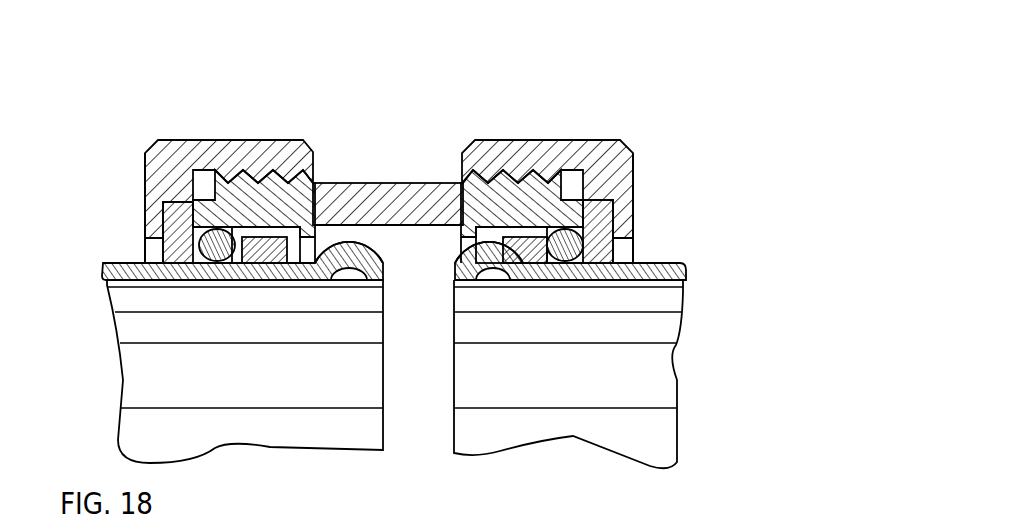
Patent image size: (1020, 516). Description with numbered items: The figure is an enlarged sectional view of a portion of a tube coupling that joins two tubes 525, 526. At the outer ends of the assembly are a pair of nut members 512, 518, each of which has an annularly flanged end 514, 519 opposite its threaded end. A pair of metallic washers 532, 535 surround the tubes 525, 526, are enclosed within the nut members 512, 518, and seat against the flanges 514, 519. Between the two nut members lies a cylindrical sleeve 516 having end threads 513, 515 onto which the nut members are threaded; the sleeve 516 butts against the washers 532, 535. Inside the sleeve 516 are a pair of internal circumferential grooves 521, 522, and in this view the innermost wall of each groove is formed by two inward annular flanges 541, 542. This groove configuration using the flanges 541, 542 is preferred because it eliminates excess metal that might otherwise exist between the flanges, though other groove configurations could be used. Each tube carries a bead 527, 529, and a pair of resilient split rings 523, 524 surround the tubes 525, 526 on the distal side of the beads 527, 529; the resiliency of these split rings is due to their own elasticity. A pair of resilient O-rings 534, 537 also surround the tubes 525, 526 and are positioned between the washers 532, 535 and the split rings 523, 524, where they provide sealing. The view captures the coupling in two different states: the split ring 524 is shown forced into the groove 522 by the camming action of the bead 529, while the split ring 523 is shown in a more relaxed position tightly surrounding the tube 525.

The nut member 512 is at (203, 148).
The end thread 513 is at (247, 152).
The annularly flanged end 514 is at (145, 193).
The end thread 515 is at (512, 147).
The cylindrical sleeve 516 is at (372, 183).
The nut member 518 is at (583, 150).
The annularly flanged end 519 is at (625, 208).
The internal circumferential groove 521 is at (323, 170).
The internal circumferential groove 522 is at (462, 185).
The resilient split ring 523 is at (250, 263).
The resilient split ring 524 is at (548, 263).
The tube 525 is at (236, 266).
The tube 526 is at (650, 273).
The bead 527 is at (377, 283).
The bead 529 is at (468, 262).
The metallic washer 532 is at (145, 257).
The resilient O-ring 534 is at (198, 268).
The metallic washer 535 is at (603, 257).
The resilient O-ring 537 is at (585, 263).
The inward annular flange 541 is at (348, 262).
The inward annular flange 542 is at (455, 228).